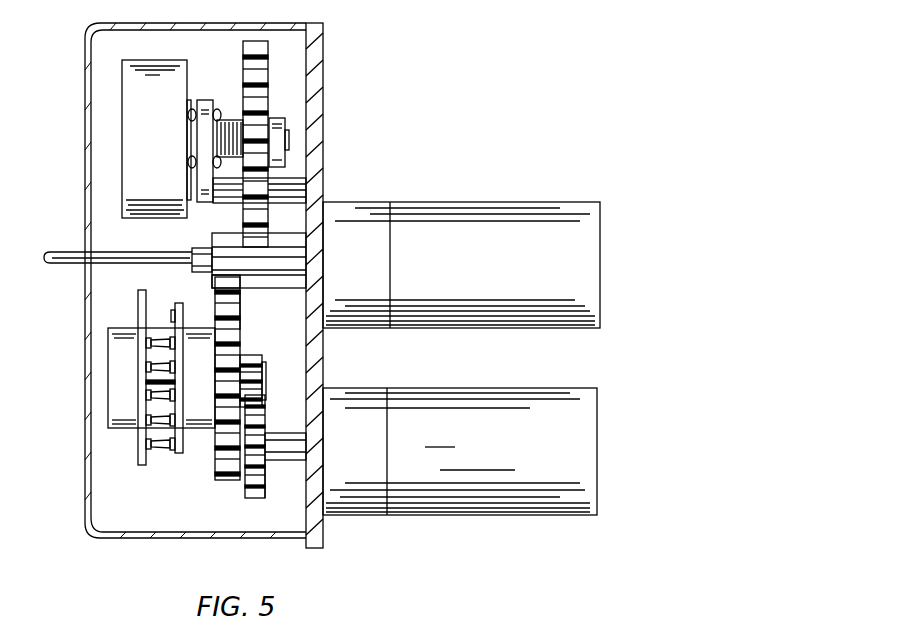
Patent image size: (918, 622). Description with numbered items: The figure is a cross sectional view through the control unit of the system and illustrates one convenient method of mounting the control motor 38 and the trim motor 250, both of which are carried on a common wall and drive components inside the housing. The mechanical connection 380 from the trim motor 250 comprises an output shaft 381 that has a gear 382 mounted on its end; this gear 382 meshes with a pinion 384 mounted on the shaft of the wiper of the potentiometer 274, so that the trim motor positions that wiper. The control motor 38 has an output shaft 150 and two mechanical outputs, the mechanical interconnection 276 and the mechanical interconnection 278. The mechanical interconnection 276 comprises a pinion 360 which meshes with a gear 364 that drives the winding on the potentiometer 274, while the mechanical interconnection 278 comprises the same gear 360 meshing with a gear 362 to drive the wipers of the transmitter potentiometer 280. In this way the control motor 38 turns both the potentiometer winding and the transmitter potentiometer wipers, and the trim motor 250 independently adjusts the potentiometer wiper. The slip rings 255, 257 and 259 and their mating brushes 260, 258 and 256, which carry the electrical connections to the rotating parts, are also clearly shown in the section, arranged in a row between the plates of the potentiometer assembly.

The control motor 38 is at (545, 287).
The output shaft 150 is at (58, 253).
The trim motor 250 is at (516, 455).
The slip ring 255 is at (172, 368).
The brush 256 is at (162, 445).
The slip ring 257 is at (173, 423).
The brush 258 is at (167, 342).
The slip ring 259 is at (172, 317).
The brush 260 is at (160, 395).
The potentiometer 274 is at (202, 415).
The mechanical interconnection 276 is at (245, 301).
The mechanical interconnection 278 is at (273, 214).
The transmitter potentiometer 280 is at (140, 173).
The pinion 360 is at (288, 237).
The gear 362 is at (260, 177).
The gear 364 is at (242, 310).
The mechanical connection 380 is at (268, 466).
The output shaft 381 is at (272, 438).
The gear 382 is at (255, 490).
The pinion 384 is at (250, 362).